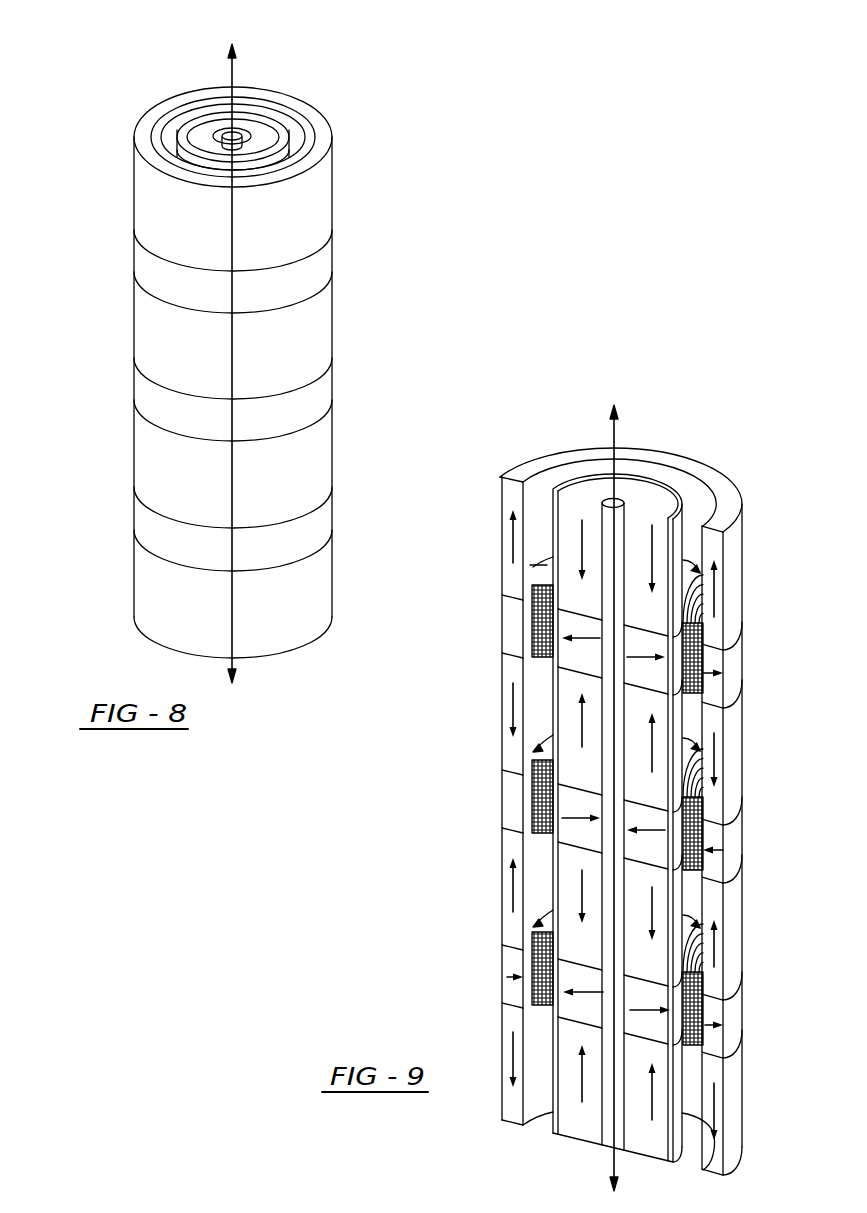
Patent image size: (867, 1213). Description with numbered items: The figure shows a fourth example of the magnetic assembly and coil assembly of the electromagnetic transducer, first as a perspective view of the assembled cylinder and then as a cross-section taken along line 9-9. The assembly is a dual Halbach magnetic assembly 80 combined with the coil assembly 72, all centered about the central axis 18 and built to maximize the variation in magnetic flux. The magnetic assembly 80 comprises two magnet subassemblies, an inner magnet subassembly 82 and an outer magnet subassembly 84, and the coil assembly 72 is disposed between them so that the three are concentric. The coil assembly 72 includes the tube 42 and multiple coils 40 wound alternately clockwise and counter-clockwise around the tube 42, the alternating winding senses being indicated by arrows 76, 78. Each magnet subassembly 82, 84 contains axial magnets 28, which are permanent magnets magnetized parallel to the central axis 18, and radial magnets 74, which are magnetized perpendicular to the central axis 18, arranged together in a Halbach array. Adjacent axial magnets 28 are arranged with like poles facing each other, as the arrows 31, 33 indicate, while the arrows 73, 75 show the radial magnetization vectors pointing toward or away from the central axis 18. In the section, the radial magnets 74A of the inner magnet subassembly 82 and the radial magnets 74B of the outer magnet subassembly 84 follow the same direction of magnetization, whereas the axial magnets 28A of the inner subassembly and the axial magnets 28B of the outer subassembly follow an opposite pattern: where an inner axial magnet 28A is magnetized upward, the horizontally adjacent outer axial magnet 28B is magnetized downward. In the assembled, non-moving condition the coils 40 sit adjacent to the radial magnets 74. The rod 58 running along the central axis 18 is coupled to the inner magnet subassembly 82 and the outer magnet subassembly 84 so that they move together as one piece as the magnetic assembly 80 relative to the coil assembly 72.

In FIG. 8, the section line 9- 9 is at (43, 80).
In FIG. 8, the central axis 18 is at (239, 352).
In FIG. 9, the central axis 18 is at (615, 437).
In FIG. 9, the axial magnets 28 is at (627, 810).
In FIG. 9, the axial magnets of the inner magnet subassembly 28A is at (638, 520).
In FIG. 9, the axial magnets of the outer magnet subassembly 28B is at (508, 493).
In FIG. 9, the arrow 31 is at (510, 716).
In FIG. 9, the arrow 33 is at (508, 890).
In FIG. 9, the coils 40 is at (693, 1047).
In FIG. 9, the tube 42 is at (683, 537).
In FIG. 8, the rod 58 is at (240, 127).
In FIG. 8, the coil assembly 72 is at (163, 140).
In FIG. 9, the arrow 73 is at (515, 623).
In FIG. 9, the radial magnets 74 is at (577, 1007).
In FIG. 9, the radial magnets of the inner magnet subassembly 74A is at (653, 813).
In FIG. 9, the radial magnets of the outer magnet subassembly 74B is at (737, 842).
In FIG. 9, the arrow 75 is at (515, 797).
In FIG. 9, the arrow 76 is at (545, 560).
In FIG. 9, the arrow 78 is at (687, 745).
In FIG. 8, the dual Halbach magnetic assembly 80 is at (207, 126).
In FIG. 8, the inner magnet subassembly 82 is at (260, 140).
In FIG. 8, the outer magnet subassembly 84 is at (310, 195).